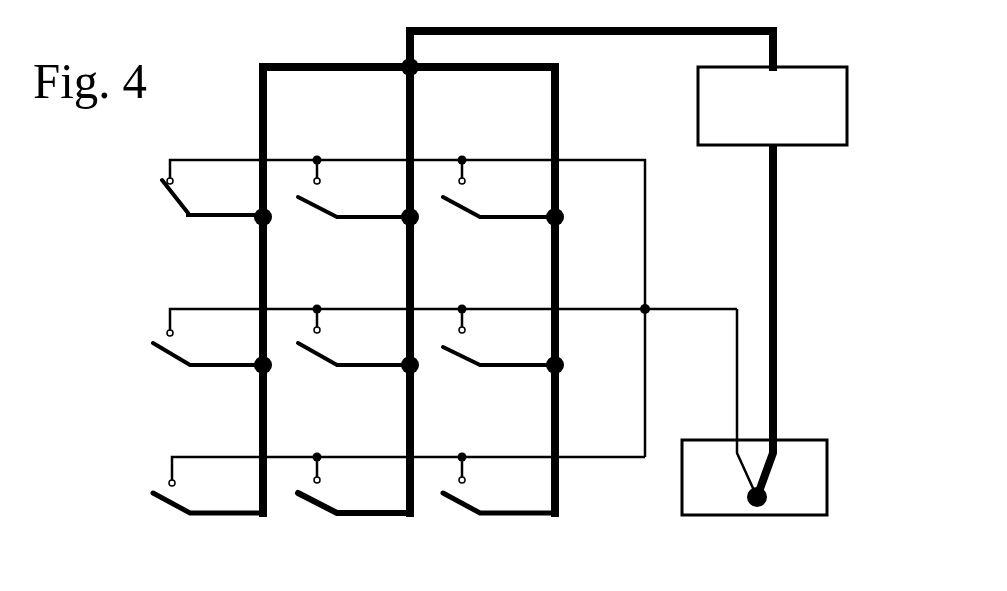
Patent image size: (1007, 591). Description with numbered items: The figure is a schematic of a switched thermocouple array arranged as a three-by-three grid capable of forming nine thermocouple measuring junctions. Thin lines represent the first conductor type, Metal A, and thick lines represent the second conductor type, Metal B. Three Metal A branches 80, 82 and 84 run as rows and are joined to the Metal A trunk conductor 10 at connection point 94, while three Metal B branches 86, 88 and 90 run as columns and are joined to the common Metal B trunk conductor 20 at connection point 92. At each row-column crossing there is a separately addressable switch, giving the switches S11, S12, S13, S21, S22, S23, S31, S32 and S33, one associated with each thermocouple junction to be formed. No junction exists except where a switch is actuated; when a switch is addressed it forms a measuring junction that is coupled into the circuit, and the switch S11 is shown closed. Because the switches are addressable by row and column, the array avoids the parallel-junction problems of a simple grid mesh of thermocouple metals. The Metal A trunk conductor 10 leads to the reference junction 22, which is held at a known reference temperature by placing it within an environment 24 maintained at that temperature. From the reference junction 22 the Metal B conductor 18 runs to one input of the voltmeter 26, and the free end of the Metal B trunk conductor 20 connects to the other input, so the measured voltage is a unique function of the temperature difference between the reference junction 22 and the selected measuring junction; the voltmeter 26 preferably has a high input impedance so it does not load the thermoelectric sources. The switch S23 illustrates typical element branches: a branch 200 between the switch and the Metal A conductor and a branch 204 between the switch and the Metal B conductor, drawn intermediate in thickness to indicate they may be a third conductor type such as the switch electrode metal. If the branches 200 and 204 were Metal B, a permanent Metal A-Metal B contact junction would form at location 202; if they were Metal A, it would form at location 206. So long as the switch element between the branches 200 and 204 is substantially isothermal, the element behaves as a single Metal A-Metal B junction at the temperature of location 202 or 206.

The Metal A trunk conductor 10 is at (723, 305).
The Metal B conductor 18 is at (785, 228).
The Metal B trunk conductor 20 is at (627, 38).
The reference junction 22 is at (733, 496).
The environment 24 is at (807, 480).
The voltmeter 26 is at (822, 80).
The Metal A branch 80 is at (607, 158).
The Metal A branch 82 is at (592, 307).
The Metal A branch 84 is at (598, 452).
The Metal B branch 86 is at (258, 133).
The Metal B branch 88 is at (400, 135).
The Metal B branch 90 is at (542, 130).
The connection point 92 is at (398, 57).
The connection point 94 is at (657, 302).
The branch 200 is at (467, 320).
The location 202 is at (467, 305).
The branch 204 is at (527, 370).
The location 206 is at (568, 365).
The switch S11 is at (203, 215).
The switch S12 is at (350, 224).
The switch S13 is at (496, 224).
The switch S21 is at (203, 371).
The switch S22 is at (350, 371).
The switch S23 is at (458, 373).
The switch S31 is at (203, 521).
The switch S32 is at (350, 521).
The switch S33 is at (496, 521).